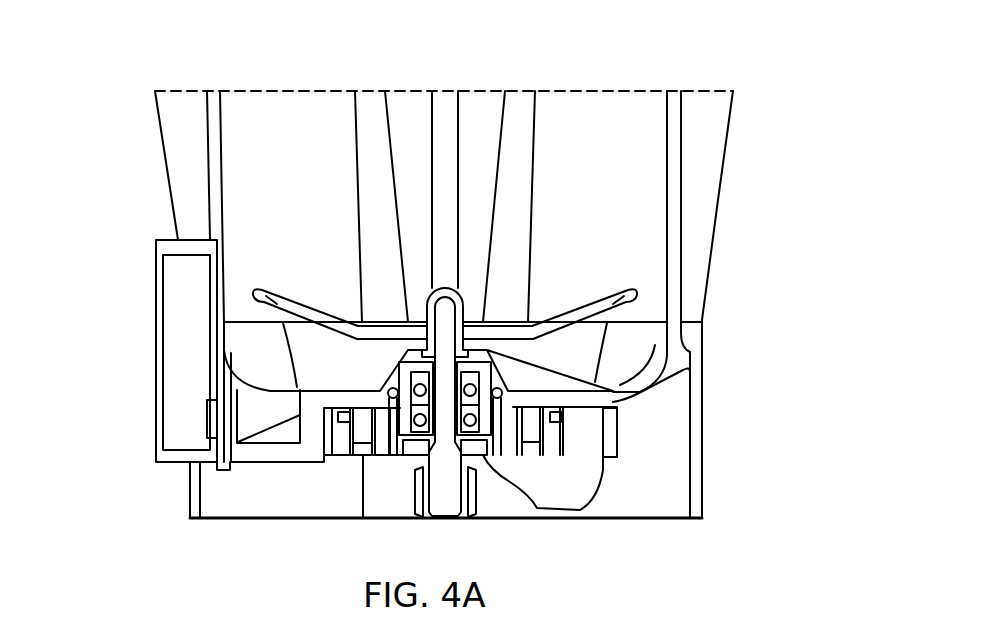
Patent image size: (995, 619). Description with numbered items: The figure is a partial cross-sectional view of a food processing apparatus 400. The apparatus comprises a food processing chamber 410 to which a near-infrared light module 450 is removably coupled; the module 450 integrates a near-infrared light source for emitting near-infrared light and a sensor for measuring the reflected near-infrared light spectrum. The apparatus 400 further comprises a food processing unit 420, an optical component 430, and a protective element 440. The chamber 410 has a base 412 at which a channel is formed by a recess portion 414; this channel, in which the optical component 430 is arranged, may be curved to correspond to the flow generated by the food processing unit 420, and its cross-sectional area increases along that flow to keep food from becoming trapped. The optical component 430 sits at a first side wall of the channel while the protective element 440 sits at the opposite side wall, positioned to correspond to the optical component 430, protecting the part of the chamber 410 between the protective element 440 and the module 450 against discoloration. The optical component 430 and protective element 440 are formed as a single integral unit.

The food processing apparatus 400 is at (802, 77).
The food processing chamber 410 is at (695, 193).
The food processing unit 420 is at (570, 322).
The base 412 is at (573, 397).
The optical component 430 is at (317, 428).
The recess portion 414 is at (273, 430).
The protective element 440 is at (228, 418).
The near-infrared light module 450 is at (173, 312).